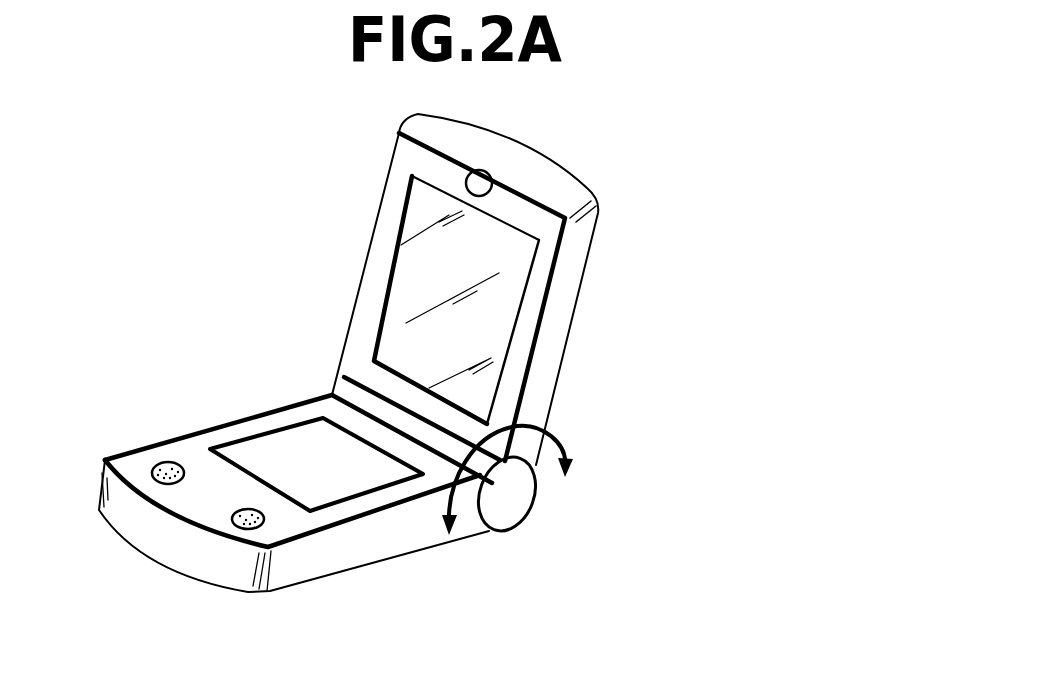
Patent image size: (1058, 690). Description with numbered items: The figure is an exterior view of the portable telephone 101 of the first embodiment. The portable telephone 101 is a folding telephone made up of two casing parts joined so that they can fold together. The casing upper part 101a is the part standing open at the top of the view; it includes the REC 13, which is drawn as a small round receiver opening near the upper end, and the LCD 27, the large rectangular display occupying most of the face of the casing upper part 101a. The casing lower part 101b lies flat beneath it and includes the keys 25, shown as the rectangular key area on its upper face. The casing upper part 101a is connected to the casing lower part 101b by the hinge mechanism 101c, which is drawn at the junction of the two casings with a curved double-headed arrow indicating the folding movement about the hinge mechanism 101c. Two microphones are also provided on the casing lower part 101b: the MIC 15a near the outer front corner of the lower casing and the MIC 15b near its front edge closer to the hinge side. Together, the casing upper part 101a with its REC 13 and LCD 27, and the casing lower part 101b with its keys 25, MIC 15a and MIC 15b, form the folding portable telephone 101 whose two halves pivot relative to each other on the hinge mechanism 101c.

The portable telephone 101 is at (595, 168).
The casing upper part 101a is at (578, 236).
The casing lower part 101b is at (413, 535).
The hinge mechanism 101c is at (516, 499).
The REC 13 is at (478, 177).
The LCD 27 is at (505, 303).
The keys 25 is at (336, 481).
The MIC 15a is at (158, 459).
The MIC 15b is at (248, 528).